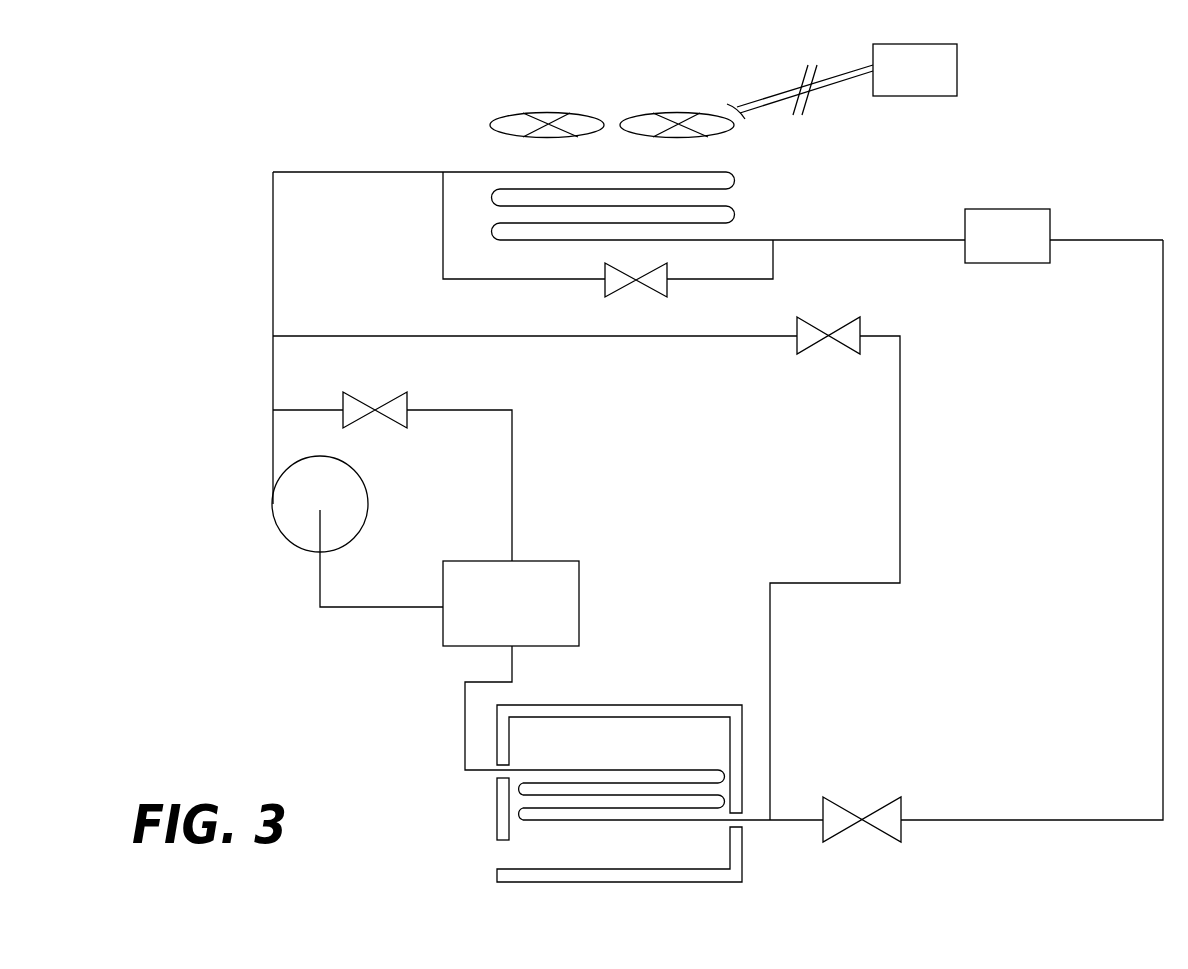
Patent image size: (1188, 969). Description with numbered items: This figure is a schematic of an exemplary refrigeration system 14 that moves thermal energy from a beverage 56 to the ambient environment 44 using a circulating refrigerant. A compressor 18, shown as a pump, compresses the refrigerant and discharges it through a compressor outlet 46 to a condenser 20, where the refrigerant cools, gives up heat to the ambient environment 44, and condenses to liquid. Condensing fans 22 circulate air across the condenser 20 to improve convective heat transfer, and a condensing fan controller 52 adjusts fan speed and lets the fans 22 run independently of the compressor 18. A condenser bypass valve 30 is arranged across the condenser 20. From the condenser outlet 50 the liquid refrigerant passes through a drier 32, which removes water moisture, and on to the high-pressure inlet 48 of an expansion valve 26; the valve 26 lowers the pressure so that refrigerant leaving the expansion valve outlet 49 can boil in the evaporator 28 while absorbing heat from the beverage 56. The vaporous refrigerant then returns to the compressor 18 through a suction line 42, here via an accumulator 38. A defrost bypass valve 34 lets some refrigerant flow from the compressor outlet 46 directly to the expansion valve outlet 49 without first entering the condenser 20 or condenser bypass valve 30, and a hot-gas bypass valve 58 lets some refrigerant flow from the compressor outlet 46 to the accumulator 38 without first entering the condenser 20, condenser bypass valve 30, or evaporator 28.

The refrigeration system 14 is at (236, 118).
The condensing fan 22 is at (490, 122).
The condensing fan controller 52 is at (957, 70).
The condenser 20 is at (737, 212).
The ambient environment 44 is at (733, 160).
The condenser outlet 50 is at (884, 240).
The drier 32 is at (1008, 209).
The condenser bypass valve 30 is at (603, 288).
The defrost bypass valve 34 is at (845, 353).
The hot-gas bypass valve 58 is at (355, 392).
The compressor outlet 46 is at (273, 440).
The compressor 18 is at (272, 523).
The compressor suction line 42 is at (320, 597).
The accumulator 38 is at (580, 575).
The beverage 56 is at (636, 758).
The evaporator 28 is at (545, 820).
The expansion valve outlet 49 is at (793, 821).
The expansion valve 26 is at (827, 842).
The high-pressure inlet 48 is at (980, 821).